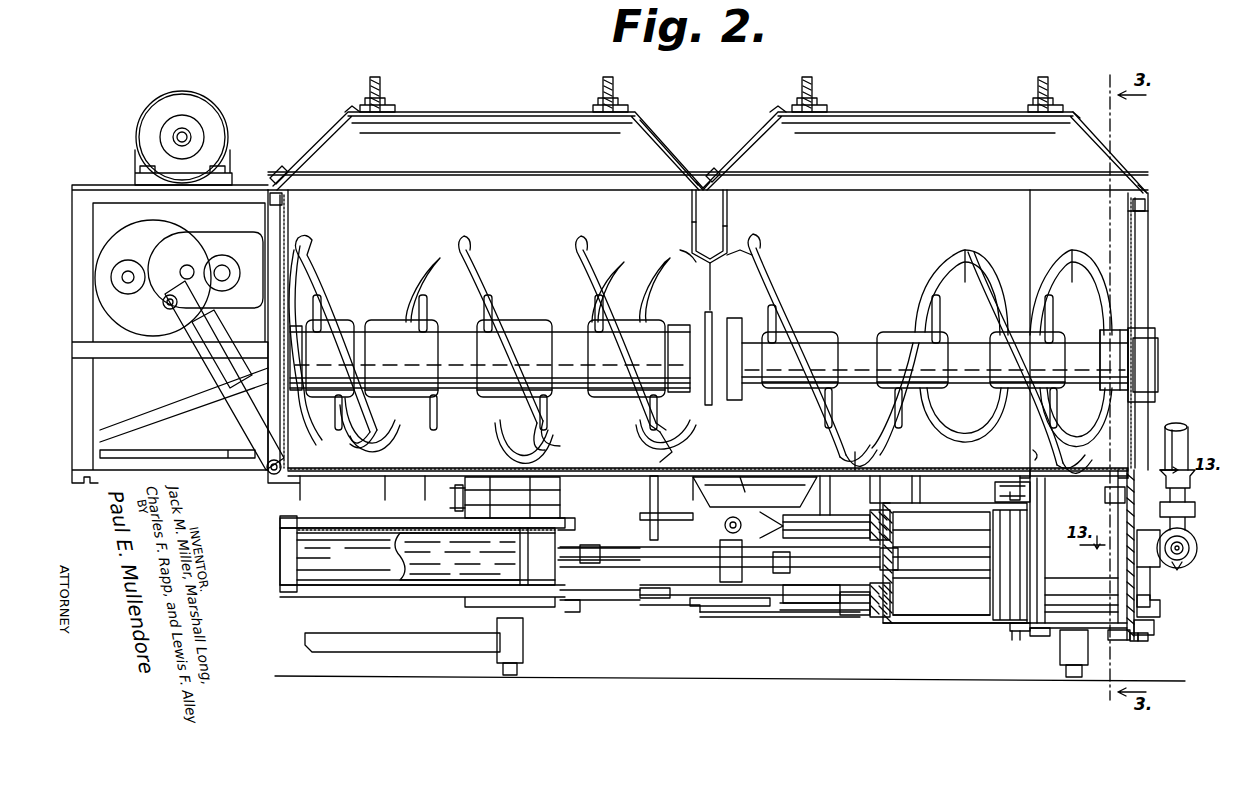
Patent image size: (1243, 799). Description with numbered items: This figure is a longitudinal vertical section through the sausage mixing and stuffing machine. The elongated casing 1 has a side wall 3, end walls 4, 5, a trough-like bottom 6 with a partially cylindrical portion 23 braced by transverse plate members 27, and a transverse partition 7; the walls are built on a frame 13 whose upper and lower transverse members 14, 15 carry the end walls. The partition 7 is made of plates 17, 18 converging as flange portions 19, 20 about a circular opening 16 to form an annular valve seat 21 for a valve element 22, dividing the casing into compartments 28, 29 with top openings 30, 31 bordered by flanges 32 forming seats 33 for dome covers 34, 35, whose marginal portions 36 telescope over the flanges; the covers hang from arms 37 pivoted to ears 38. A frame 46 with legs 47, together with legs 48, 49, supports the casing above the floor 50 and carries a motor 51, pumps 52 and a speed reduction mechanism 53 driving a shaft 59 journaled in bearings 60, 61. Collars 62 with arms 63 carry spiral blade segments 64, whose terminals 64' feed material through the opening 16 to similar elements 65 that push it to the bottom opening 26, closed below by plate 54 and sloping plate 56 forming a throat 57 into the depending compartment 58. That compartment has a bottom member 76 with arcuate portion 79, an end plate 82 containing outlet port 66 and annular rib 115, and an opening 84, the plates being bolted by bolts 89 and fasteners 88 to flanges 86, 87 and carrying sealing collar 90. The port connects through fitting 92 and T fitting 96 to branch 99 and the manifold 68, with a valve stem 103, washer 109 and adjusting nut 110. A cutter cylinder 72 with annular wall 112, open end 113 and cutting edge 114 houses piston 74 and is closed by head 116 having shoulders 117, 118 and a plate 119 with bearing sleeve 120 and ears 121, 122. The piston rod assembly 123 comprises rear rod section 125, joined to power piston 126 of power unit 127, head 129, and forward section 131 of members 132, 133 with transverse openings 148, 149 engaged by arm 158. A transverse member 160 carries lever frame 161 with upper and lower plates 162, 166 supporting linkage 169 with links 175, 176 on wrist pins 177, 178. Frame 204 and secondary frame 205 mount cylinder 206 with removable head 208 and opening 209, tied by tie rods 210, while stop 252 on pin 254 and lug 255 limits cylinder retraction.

The casing 1 is at (1143, 186).
The side wall 3 is at (990, 195).
The end wall 4 is at (1142, 258).
The end wall 5 is at (290, 222).
The bottom 6 is at (317, 473).
The transverse inner partition 7 is at (727, 212).
The frame 13 is at (1146, 203).
The upper transverse member 14 is at (1148, 212).
The lower transverse member 15 is at (1125, 471).
The circular opening 16 is at (692, 298).
The metal plate 17 is at (692, 224).
The metal plate 18 is at (727, 226).
The converging flange portion 19 is at (690, 256).
The converging flange portion 20 is at (732, 260).
The annular valve seat 21 is at (724, 268).
The valve element 22 is at (726, 314).
The partially cylindrical portion 23 is at (386, 480).
The bottom opening 26 is at (1033, 460).
The transverse plate member 27 is at (1024, 494).
The compartment 28 is at (448, 205).
The compartment 29 is at (885, 200).
The top opening 30 is at (680, 176).
The top opening 31 is at (1118, 163).
The flange 32 is at (735, 180).
The seat 33 is at (717, 178).
The cover 34 is at (348, 112).
The cover 35 is at (779, 112).
The marginal portion 36 is at (702, 182).
The arm 37 is at (812, 78).
The ear 38 is at (818, 91).
The frame 46 is at (93, 183).
The leg 47 is at (92, 405).
The leg 48 is at (524, 643).
The leg 49 is at (1060, 652).
The floor line 50 is at (696, 678).
The motor 51 is at (150, 113).
The pump 52 is at (137, 236).
The speed reduction mechanism 53 is at (236, 306).
The transverse plate 54 is at (1031, 473).
The sloping plate 56 is at (1120, 306).
The throat 57 is at (1120, 455).
The depending compartment 58 is at (1152, 570).
The shaft 59 is at (300, 400).
The bearing 60 is at (1148, 378).
The bearing 61 is at (298, 447).
The collar 62 is at (418, 393).
The arm 63 is at (481, 308).
The spiral blade segment 64 is at (495, 349).
The blade terminal 64' is at (640, 440).
The mixing and feeding element 65 is at (798, 335).
The outlet port 66 is at (1190, 532).
The manifold 68 is at (1190, 492).
The cutter cylinder 72 is at (962, 625).
The piston 74 is at (1015, 628).
The bottom member 76 is at (1022, 640).
The arcuate bottom portion 79 is at (1112, 641).
The end plate 82 is at (1142, 630).
The opening 84 is at (1036, 612).
The flange 86 is at (1034, 636).
The flange 87 is at (1135, 641).
The bolt 88 is at (1012, 640).
The bolt 89 is at (1148, 641).
The sealing collar 90 is at (998, 490).
The fitting 92 is at (1124, 558).
The T fitting 96 is at (1193, 545).
The branch 99 is at (1192, 509).
The valve stem 103 is at (1191, 555).
The washer 109 is at (1198, 550).
The adjusting nut 110 is at (1182, 566).
The annular wall 112 is at (930, 625).
The open end 113 is at (1031, 525).
The cutting edge 114 is at (1026, 581).
The annular rib 115 is at (1107, 506).
The head 116 is at (882, 620).
The annular shoulder 117 is at (921, 480).
The shoulder 118 is at (904, 597).
The plate 119 is at (880, 480).
The bearing sleeve 120 is at (820, 608).
The ear 121 is at (885, 462).
The ear 122 is at (870, 614).
The piston rod assembly 123 is at (635, 602).
The rear rod section 125 is at (673, 556).
The piston 126 is at (450, 590).
The power unit 127 is at (350, 590).
The head 129 is at (728, 606).
The composite forward rod section 131 is at (948, 546).
The longitudinal member 132 is at (970, 556).
The longitudinal member 133 is at (991, 565).
The transverse opening 148 is at (775, 600).
The transverse opening 149 is at (905, 546).
The arm 158 is at (836, 566).
The transverse member 160 is at (740, 476).
The lever supporting frame 161 is at (640, 526).
The upper plate 162 is at (662, 460).
The lower plate 166 is at (668, 598).
The linkage 169 is at (830, 476).
The link 175 is at (858, 450).
The link 176 is at (790, 617).
The wrist pin 177 is at (913, 476).
The wrist pin 178 is at (845, 617).
The frame 204 is at (481, 478).
The secondary frame 205 is at (368, 518).
The cylinder 206 is at (396, 598).
The removable head 208 is at (595, 602).
The opening 209 is at (540, 602).
The tie rod 210 is at (645, 612).
The stop 252 is at (770, 518).
The pin 254 is at (733, 518).
The depending lug 255 is at (690, 576).